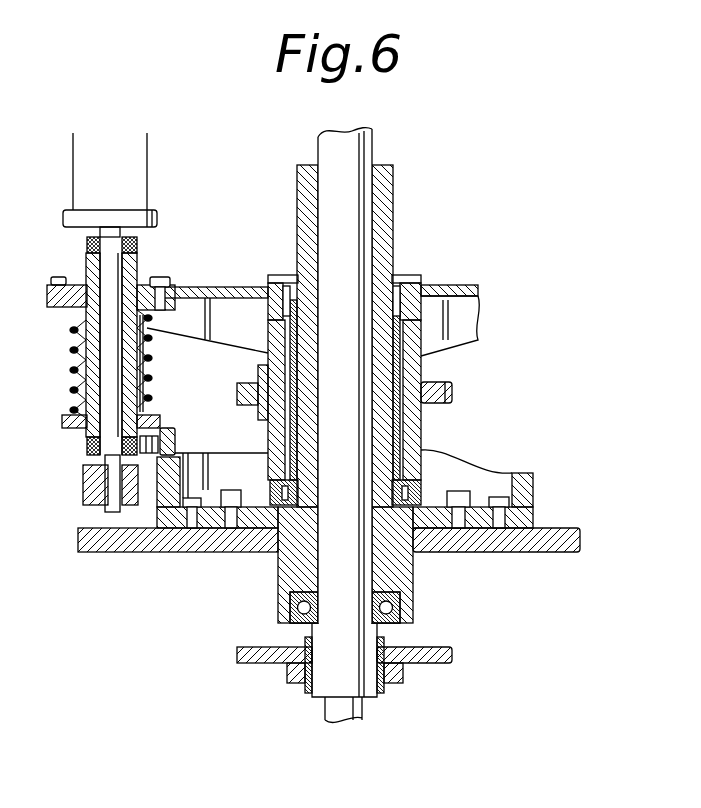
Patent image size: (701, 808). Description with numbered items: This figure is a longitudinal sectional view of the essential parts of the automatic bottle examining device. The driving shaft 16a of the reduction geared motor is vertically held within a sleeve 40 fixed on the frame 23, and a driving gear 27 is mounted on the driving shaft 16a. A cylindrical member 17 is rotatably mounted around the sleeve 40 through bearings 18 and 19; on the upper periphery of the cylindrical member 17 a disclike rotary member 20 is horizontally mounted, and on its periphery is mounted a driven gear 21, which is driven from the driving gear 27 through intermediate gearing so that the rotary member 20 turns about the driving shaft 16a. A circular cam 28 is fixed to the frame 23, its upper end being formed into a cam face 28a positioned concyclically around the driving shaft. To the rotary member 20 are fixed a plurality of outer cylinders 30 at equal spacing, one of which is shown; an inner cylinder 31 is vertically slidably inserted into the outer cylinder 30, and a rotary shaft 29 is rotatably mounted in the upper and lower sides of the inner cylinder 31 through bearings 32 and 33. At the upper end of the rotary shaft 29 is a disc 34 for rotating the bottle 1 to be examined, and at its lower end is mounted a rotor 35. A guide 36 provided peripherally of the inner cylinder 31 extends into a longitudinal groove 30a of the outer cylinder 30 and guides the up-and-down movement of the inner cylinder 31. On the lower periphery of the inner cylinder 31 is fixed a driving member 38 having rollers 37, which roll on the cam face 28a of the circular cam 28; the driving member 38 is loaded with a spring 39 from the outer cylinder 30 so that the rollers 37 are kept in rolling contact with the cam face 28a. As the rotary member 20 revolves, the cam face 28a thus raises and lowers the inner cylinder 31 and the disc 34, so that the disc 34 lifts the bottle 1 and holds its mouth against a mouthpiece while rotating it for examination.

The bottle 1 is at (147, 183).
The driving shaft 16a is at (359, 320).
The cylindrical member 17 is at (413, 433).
The bearing 18 is at (280, 275).
The bearing 19 is at (412, 488).
The rotary member 20 is at (205, 288).
The driven gear 21 is at (448, 384).
The frame 23 is at (102, 553).
The driving gear 27 is at (433, 663).
The circular cam 28 is at (160, 516).
The cam face 28a is at (243, 455).
The rotary shaft 29 is at (105, 362).
The outer cylinder 30 is at (70, 310).
The longitudinal groove 30a is at (160, 286).
The inner cylinder 31 is at (85, 432).
The bearing 32 is at (137, 245).
The bearing 33 is at (92, 447).
The disc 34 is at (127, 200).
The rotor 35 is at (84, 485).
The guide 36 is at (152, 352).
The roller 37 is at (165, 438).
The driving member 38 is at (150, 415).
The spring 39 is at (70, 352).
The sleeve 40 is at (394, 229).